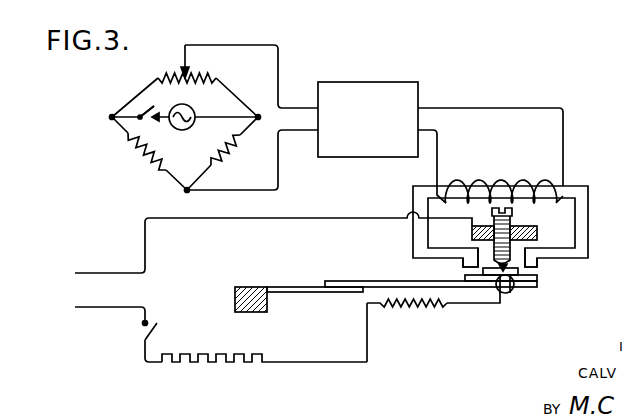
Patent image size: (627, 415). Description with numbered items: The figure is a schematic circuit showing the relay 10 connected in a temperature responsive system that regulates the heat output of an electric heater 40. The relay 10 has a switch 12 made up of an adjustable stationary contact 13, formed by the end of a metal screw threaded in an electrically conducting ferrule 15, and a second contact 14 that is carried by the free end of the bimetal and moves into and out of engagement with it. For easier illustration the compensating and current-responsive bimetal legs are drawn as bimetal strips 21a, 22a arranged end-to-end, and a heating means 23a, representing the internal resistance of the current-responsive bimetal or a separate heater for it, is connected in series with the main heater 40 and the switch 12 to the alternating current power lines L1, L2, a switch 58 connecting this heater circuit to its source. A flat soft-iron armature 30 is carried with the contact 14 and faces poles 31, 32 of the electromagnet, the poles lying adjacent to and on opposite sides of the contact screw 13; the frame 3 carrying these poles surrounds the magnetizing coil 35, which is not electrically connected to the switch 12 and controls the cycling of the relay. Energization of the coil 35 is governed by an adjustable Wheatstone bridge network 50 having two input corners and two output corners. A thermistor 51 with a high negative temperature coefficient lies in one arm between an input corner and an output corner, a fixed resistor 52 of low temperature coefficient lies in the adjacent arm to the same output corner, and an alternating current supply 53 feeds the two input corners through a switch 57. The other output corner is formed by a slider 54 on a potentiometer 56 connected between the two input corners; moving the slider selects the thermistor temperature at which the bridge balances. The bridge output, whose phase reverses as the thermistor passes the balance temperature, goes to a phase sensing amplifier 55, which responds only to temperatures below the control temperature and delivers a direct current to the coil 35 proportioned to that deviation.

The magnetic frame 3 is at (590, 235).
The relay 10 is at (390, 253).
The switch 12 is at (522, 273).
The adjustable stationary contact 13 is at (512, 221).
The second contact 14 is at (513, 290).
The ferrule 15 is at (490, 224).
The bimetal strip 21a is at (303, 292).
The bimetal strip 22a is at (410, 281).
The heating means 23a is at (412, 307).
The armature 30 is at (538, 277).
The pole 31 is at (463, 262).
The pole 32 is at (538, 265).
The magnetizing coil 35 is at (518, 182).
The electric heater 40 is at (213, 364).
The Wheatstone bridge network 50 is at (223, 106).
The thermistor 51 is at (225, 152).
The fixed resistor 52 is at (146, 152).
The alternating current supply 53 is at (192, 127).
The slider 54 is at (188, 57).
The phase sensing amplifier 55 is at (390, 157).
The potentiometer 56 is at (182, 68).
The switch 57 is at (147, 119).
The switch 58 is at (154, 328).
The supply line L1 is at (92, 272).
The supply line L2 is at (98, 309).